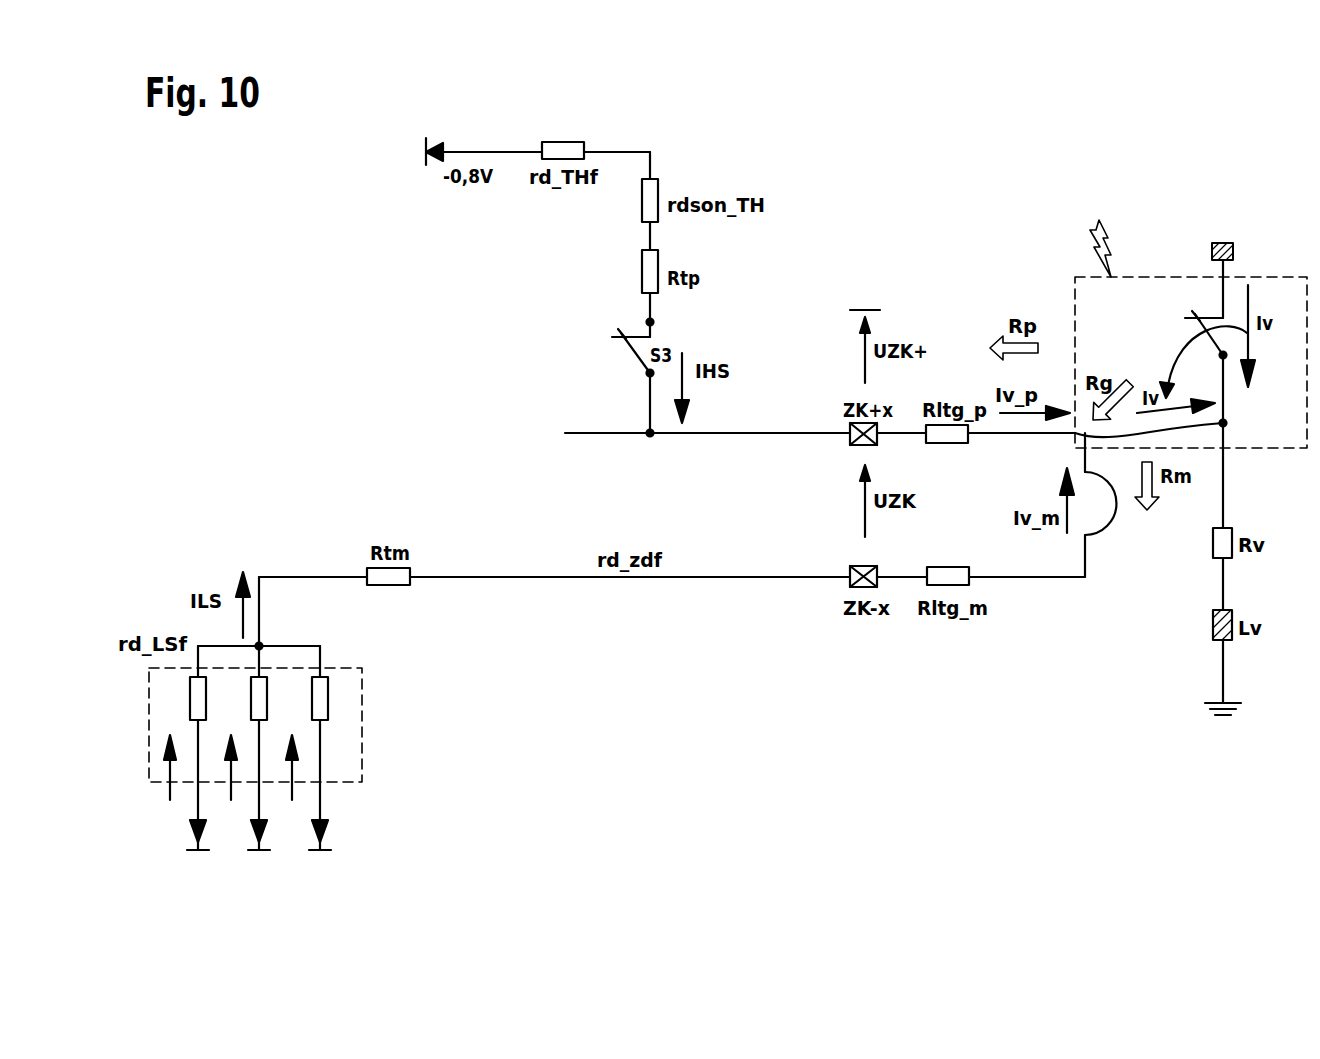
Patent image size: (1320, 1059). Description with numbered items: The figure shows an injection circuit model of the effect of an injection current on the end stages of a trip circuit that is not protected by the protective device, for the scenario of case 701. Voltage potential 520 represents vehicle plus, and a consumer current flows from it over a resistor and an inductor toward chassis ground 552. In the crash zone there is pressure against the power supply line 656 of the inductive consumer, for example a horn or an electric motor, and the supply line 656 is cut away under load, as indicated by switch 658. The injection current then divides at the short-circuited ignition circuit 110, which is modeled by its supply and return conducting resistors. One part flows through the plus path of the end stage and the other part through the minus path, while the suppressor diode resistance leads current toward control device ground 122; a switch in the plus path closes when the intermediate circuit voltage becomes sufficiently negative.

The control device ground 122 is at (419, 160).
The case 701 is at (1098, 220).
The voltage potential 520 is at (1222, 240).
The switch 658 is at (1190, 325).
The power supply line 656 is at (1223, 483).
The ignition circuit 110 is at (1115, 525).
The chassis ground 552 is at (1222, 718).